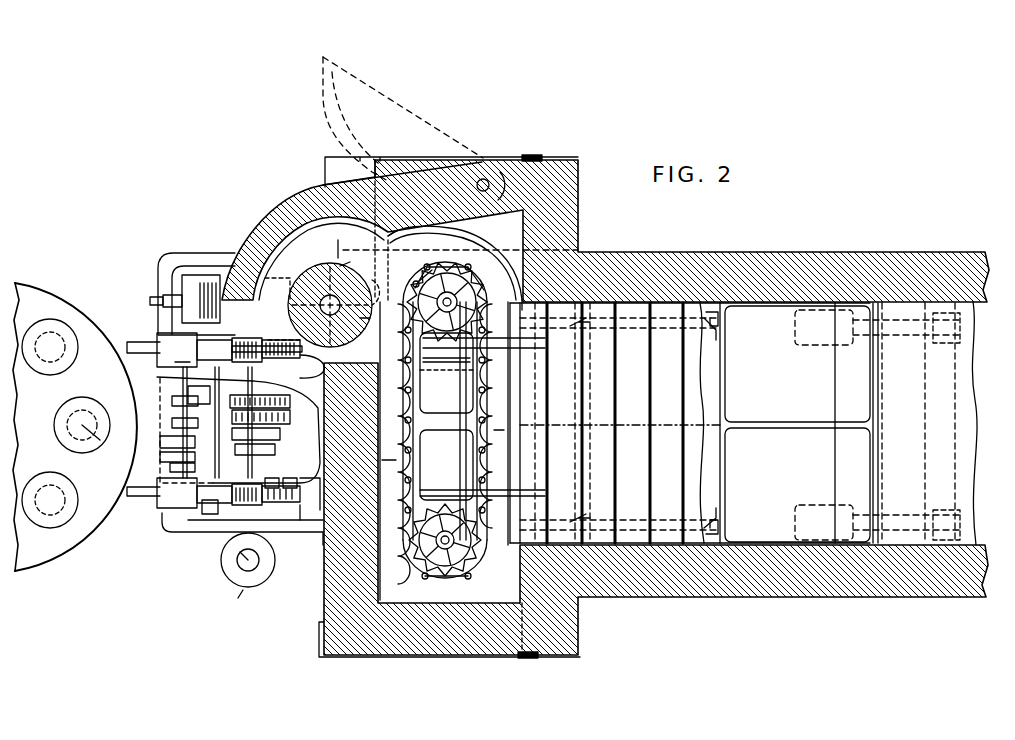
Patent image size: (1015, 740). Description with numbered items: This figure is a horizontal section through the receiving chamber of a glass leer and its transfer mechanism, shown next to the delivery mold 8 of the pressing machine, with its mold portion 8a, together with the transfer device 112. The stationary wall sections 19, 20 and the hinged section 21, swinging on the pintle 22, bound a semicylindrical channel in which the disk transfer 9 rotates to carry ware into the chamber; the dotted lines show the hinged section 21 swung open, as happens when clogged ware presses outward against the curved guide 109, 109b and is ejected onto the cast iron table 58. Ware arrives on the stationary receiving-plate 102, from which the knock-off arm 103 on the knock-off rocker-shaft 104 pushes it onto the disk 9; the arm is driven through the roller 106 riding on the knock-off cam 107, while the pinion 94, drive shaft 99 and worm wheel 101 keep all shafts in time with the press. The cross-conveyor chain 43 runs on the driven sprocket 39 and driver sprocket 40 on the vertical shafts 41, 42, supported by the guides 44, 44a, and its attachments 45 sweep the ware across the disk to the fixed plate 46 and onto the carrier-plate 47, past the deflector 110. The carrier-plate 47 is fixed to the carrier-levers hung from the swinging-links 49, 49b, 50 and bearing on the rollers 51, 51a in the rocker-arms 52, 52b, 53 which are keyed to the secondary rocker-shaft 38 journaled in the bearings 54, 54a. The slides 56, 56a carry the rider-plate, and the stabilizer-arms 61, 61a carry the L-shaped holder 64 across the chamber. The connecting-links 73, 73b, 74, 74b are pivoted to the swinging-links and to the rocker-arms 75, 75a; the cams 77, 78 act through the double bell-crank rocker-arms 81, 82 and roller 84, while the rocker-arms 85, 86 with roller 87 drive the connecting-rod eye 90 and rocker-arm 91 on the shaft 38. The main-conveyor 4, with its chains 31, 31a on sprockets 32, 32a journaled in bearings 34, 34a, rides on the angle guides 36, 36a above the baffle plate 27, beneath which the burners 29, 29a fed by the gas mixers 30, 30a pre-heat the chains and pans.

The main-conveyor 4 is at (690, 423).
The delivery mold 8 is at (84, 418).
The drum 8a is at (75, 427).
The disk transfer 9 is at (322, 273).
The wall section 19 is at (258, 224).
The curved wall section 20 is at (235, 250).
The hinged wall section 21 is at (300, 194).
The pintle 22 is at (485, 178).
The baffle plate 27 is at (837, 423).
The burner 29 is at (877, 327).
The bracket 29a is at (877, 522).
The gas mixer 30 is at (976, 318).
The bracket 30a is at (976, 530).
The endless chain 31 is at (714, 331).
The hinge 31a is at (718, 523).
The sprocket 32 is at (582, 324).
The rail clip 32a is at (580, 516).
The bearing 34 is at (534, 162).
The cover strip 34a is at (534, 655).
The angle guide 36 is at (716, 319).
The hinge pin 36a is at (726, 528).
The secondary rocker-shaft 38 is at (180, 418).
The driven sprocket 39 is at (479, 566).
The driver sprocket 40 is at (472, 268).
The vertical shaft 41 is at (410, 566).
The cross-conveyor drive shaft 42 is at (482, 286).
The endless chain 43 is at (425, 580).
The guide 44 is at (472, 384).
The carrier block part 44a is at (446, 373).
The chain attachment 45 is at (486, 404).
The fixed plate 46 is at (458, 240).
The carrier-plate 47 is at (486, 435).
The swinging-link 49 is at (268, 484).
The swinging-link 49b is at (306, 500).
The swinging-link 50 is at (280, 381).
The roller 51 is at (160, 340).
The bearing 51a is at (157, 503).
The rocker-arm 52 is at (183, 367).
The rocker-arm 52b is at (170, 337).
The rocker-arm 53 is at (176, 473).
The bearing 54 is at (160, 360).
The collar 54a is at (182, 507).
The slide 56 is at (447, 485).
The shaft 56a is at (292, 492).
The cast iron table 58 is at (341, 168).
The stabilizer-arm 61 is at (395, 451).
The cam bar 61a is at (392, 469).
The L-shaped holder 64 is at (510, 343).
The connecting-link 73 is at (212, 492).
The connecting-link 73b is at (203, 486).
The connecting-link 74 is at (222, 392).
The connecting-link 74b is at (195, 336).
The rocker-arm 75 is at (172, 276).
The lower housing 75a is at (245, 544).
The cam 77 is at (289, 405).
The cam 78 is at (175, 427).
The double bell-crank rocker-arm 81 is at (220, 403).
The double bell-crank rocker-arm 82 is at (290, 420).
The roller 84 is at (282, 437).
The rocker-arm 85 is at (275, 492).
The rocker-arm 86 is at (175, 466).
The roller 87 is at (278, 450).
The eye 90 is at (165, 443).
The rocker-arm 91 is at (165, 457).
The pinion 94 is at (440, 264).
The drive shaft 99 is at (162, 296).
The worm wheel 101 is at (278, 284).
The stationary receiving-plate 102 is at (312, 366).
The knock-off arm 103 is at (284, 335).
The knock-off rocker-shaft 104 is at (344, 244).
The roller 106 is at (384, 319).
The knock-off cam 107 is at (388, 284).
The jointed curved guide 109 is at (482, 234).
The jointed curved guide section 109b is at (426, 240).
The deflector 110 is at (362, 258).
The transfer device 112 is at (247, 603).